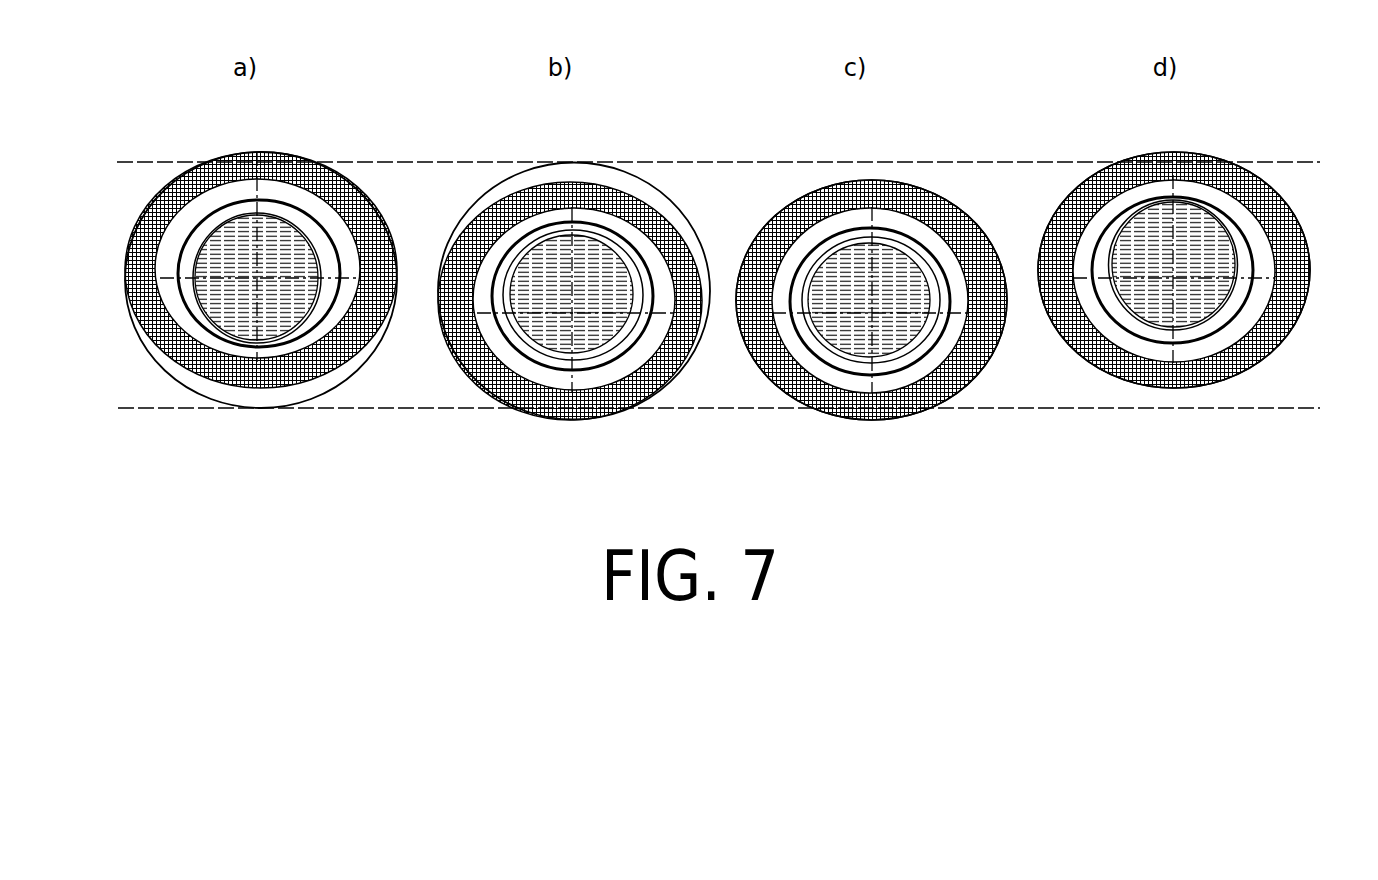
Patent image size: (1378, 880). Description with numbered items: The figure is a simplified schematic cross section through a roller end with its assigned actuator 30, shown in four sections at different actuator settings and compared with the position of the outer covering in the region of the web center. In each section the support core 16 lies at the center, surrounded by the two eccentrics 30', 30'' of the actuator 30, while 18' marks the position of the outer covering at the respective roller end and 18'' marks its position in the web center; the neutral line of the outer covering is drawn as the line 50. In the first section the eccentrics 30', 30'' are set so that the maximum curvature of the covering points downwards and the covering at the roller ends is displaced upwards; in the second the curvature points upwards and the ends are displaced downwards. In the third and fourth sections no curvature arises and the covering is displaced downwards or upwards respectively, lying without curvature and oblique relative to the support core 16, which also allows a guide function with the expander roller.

The support core 16 is at (1160, 330).
The position of the outer covering at the roller end 18' is at (725, 346).
The position of the outer covering in the web center 18'' is at (717, 310).
The actuator 30 is at (708, 311).
The first eccentric 30' is at (687, 346).
The second eccentric 30'' is at (708, 312).
The neutral line of the outer covering 50 is at (135, 408).